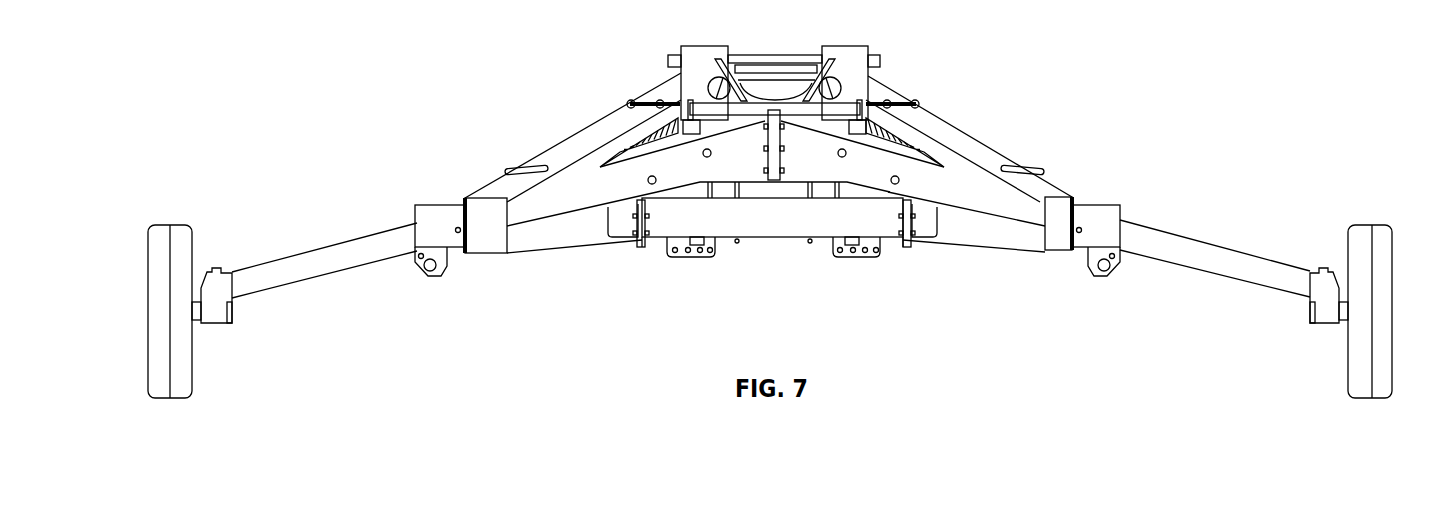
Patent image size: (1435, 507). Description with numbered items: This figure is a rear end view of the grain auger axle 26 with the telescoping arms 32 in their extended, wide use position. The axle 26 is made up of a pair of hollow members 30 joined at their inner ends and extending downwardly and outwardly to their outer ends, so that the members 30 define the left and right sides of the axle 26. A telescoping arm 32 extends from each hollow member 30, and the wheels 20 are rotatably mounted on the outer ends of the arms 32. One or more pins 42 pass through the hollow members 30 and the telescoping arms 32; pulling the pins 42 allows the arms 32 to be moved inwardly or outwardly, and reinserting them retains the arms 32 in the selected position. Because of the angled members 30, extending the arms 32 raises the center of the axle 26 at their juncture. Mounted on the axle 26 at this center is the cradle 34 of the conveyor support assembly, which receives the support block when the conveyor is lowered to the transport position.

The wheels 20 is at (172, 222).
The axle 26 is at (668, 178).
The hollow members 30 is at (575, 190).
The telescoping arms 32 is at (313, 255).
The cradle 34 is at (716, 70).
The pins 42 is at (458, 230).